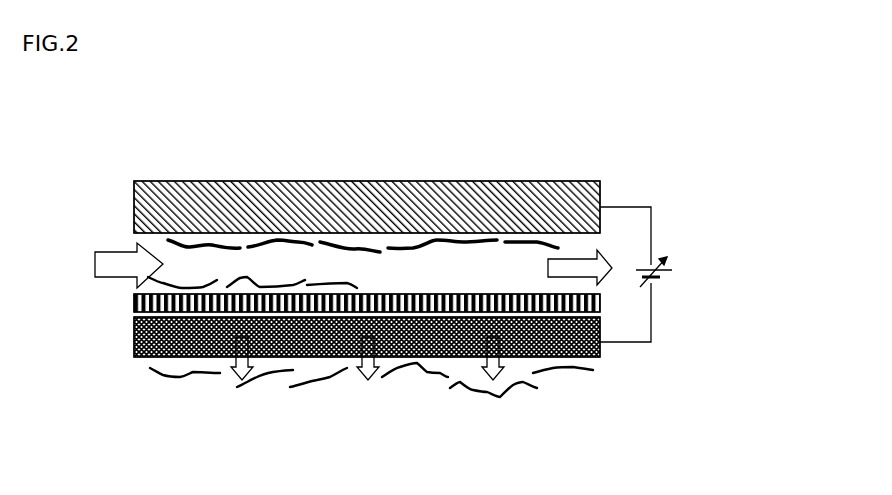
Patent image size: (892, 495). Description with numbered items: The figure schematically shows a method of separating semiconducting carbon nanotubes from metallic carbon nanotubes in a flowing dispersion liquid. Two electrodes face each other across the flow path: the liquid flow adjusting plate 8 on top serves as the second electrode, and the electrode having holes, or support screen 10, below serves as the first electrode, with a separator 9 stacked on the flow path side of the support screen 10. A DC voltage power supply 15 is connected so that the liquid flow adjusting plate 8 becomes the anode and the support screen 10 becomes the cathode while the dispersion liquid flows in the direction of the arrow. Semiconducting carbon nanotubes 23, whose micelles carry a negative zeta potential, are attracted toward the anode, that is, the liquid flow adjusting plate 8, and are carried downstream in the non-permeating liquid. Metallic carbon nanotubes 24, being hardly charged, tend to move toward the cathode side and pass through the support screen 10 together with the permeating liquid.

The liquid flow adjusting plate 8 is at (408, 211).
The separator 9 is at (145, 305).
The electrode having holes 10 is at (278, 342).
The DC voltage power supply 15 is at (668, 274).
The semiconducting carbon nanotubes 23 is at (355, 248).
The metallic carbon nanotubes 24 is at (357, 288).